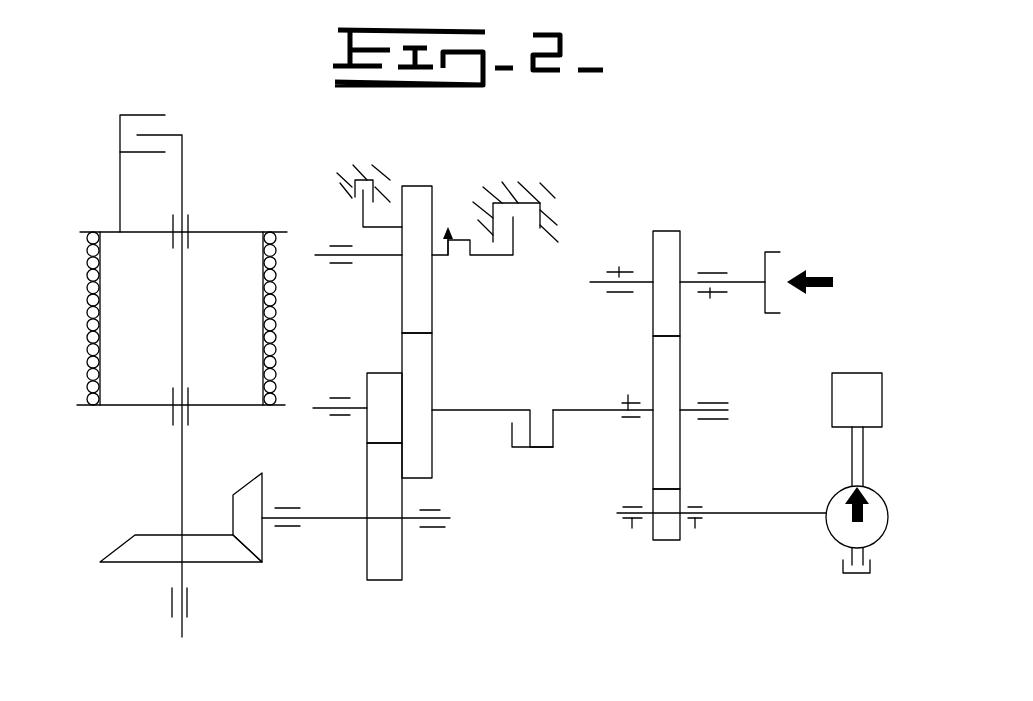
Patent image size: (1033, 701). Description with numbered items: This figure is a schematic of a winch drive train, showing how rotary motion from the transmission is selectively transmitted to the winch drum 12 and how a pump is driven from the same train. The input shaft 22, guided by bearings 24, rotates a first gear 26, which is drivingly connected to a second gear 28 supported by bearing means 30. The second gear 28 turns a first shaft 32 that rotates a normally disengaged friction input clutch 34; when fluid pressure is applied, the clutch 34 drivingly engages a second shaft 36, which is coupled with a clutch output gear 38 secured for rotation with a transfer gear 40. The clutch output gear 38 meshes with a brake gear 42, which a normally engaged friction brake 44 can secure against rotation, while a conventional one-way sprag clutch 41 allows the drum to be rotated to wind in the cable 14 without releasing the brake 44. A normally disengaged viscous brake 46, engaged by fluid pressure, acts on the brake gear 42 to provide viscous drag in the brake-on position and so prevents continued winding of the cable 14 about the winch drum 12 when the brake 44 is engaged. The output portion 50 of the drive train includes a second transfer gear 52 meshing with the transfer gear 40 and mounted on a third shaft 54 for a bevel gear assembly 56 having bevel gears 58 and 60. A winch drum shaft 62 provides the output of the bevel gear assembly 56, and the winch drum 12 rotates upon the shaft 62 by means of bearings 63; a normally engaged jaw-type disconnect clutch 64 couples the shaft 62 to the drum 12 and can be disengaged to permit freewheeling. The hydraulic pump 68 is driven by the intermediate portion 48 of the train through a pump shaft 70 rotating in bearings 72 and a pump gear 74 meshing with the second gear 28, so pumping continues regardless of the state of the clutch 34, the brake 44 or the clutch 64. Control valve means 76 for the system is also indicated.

The winch drum 12 is at (163, 288).
The cable 14 is at (88, 302).
The input shaft 22 is at (750, 280).
The bearings 24 is at (620, 273).
The first gear 26 is at (660, 302).
The second gear 28 is at (673, 377).
The bearing means 30 is at (628, 400).
The first shaft 32 is at (577, 410).
The friction input clutch 34 is at (531, 455).
The second shaft 36 is at (475, 412).
The clutch output gear 38 is at (423, 360).
The transfer gear 40 is at (380, 385).
The one-way sprag clutch 41 is at (452, 228).
The brake gear 42 is at (423, 195).
The friction brake 44 is at (524, 250).
The viscous brake 46 is at (355, 188).
The intermediate portion 48 is at (681, 314).
The output portion 50 is at (390, 355).
The second transfer gear 52 is at (378, 468).
The third shaft 54 is at (323, 521).
The bevel gear assembly 56 is at (154, 580).
The bevel gear 58 is at (232, 500).
The bevel gear 60 is at (120, 547).
The winch drum shaft 62 is at (182, 320).
The bearings 63 is at (173, 242).
The jaw-type disconnect clutch 64 is at (120, 152).
The hydraulic pump 68 is at (873, 495).
The pump shaft 70 is at (742, 512).
The bearings 72 is at (632, 527).
The pump gear 74 is at (665, 537).
The control valve means 76 is at (855, 385).